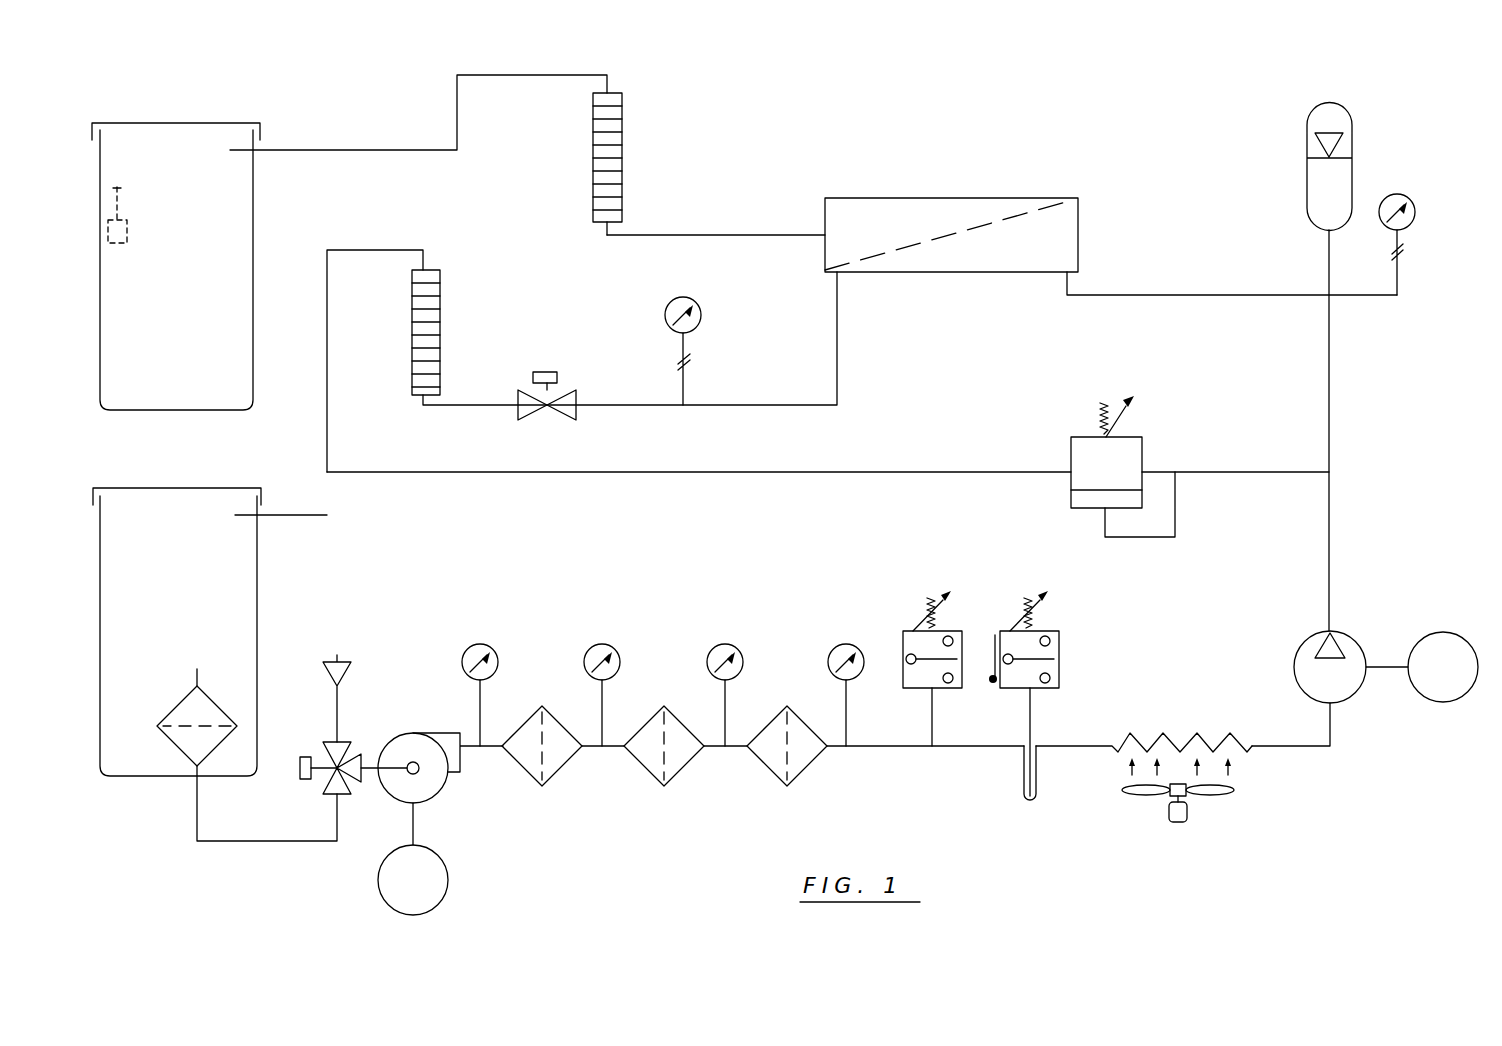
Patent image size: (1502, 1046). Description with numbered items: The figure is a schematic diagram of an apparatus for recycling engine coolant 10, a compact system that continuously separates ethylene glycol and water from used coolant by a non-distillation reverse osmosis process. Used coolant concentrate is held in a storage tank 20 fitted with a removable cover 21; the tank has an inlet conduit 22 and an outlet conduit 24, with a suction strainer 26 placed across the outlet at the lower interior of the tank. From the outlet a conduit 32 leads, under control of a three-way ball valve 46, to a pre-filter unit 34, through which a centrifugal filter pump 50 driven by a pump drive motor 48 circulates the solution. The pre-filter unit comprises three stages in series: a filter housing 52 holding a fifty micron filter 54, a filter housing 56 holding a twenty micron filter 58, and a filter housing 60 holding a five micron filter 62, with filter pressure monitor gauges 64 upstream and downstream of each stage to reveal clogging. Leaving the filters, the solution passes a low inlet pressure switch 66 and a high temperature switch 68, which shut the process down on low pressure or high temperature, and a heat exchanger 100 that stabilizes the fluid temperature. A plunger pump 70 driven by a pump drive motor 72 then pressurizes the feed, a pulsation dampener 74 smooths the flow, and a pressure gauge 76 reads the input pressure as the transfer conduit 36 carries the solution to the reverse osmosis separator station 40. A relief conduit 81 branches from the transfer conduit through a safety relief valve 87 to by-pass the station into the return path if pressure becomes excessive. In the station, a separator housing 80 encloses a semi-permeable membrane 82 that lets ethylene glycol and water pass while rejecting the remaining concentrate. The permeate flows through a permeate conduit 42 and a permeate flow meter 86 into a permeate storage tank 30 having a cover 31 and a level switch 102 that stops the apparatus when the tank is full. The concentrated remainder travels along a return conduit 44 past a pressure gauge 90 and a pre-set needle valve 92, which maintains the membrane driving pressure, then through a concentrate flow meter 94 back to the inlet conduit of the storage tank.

The apparatus for recycling engine coolant 10 is at (983, 121).
The storage tank 20 is at (257, 607).
The cover 21 is at (189, 488).
The inlet conduit 22 is at (285, 518).
The outlet conduit 24 is at (197, 806).
The suction strainer 26 is at (172, 702).
The permeate storage tank 30 is at (253, 212).
The cover 31 is at (197, 123).
The conduit 32 is at (380, 755).
The pre-filter unit 34 is at (556, 581).
The transfer conduit 36 is at (1330, 563).
The reverse osmosis separator station 40 is at (908, 199).
The permeate conduit 42 is at (743, 235).
The return conduit 44 is at (837, 362).
The three-way ball valve 46 is at (322, 752).
The pump drive motor 48 is at (445, 852).
The centrifugal filter pump 50 is at (408, 733).
The filter housing 52 is at (557, 778).
The 50 micron filter 54 is at (532, 712).
The filter housing 56 is at (679, 778).
The 20 micron filter 58 is at (655, 712).
The filter housing 60 is at (800, 778).
The 5 micron filter 62 is at (777, 712).
The filter pressure monitor gauges 64 is at (488, 645).
The low inlet pressure switch 66 is at (950, 688).
The high temperature switch 68 is at (1045, 688).
The plunger pump 70 is at (1340, 703).
The pump drive motor 72 is at (1455, 702).
The pulsation dampener 74 is at (1305, 172).
The pressure gauge 76 is at (1405, 196).
The separator housing 80 is at (953, 272).
The relief conduit 81 is at (1208, 472).
The semi-permeable membrane 82 is at (992, 222).
The permeate flow meter 86 is at (622, 113).
The safety relief valve 87 is at (1071, 450).
The pressure gauge 90 is at (701, 315).
The needle valve 92 is at (563, 388).
The concentrate flow meter 94 is at (440, 308).
The heat exchanger 100 is at (1210, 798).
The level switch 102 is at (127, 225).